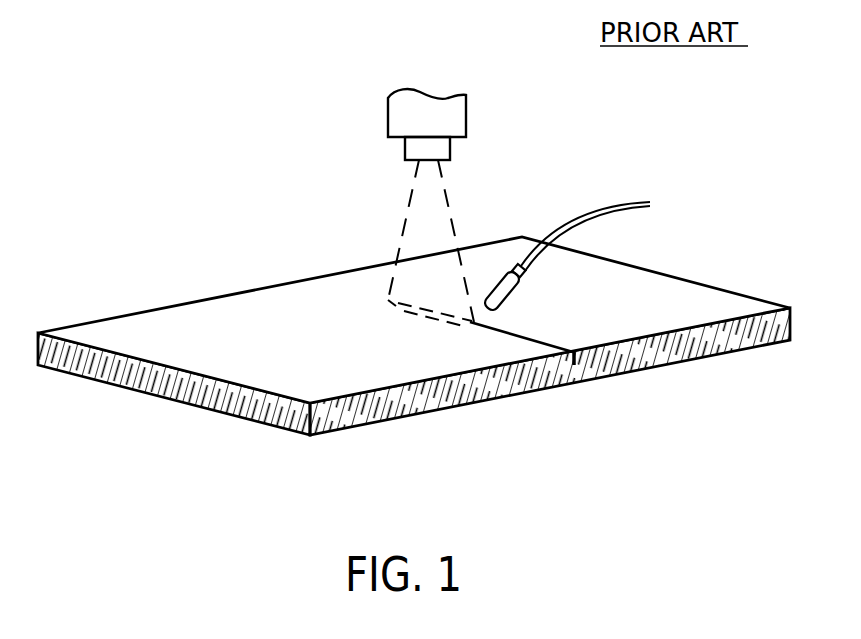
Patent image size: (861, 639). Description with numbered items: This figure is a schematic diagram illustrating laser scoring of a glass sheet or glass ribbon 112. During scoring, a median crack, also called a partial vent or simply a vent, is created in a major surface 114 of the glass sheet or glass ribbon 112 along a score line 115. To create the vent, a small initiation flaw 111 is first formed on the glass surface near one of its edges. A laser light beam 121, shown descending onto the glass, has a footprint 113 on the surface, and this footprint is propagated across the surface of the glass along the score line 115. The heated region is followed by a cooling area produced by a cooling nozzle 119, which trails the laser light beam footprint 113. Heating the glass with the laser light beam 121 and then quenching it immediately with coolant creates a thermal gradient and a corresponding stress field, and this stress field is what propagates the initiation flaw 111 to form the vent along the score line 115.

The initiation flaw 111 is at (590, 380).
The glass sheet or glass ribbon 112 is at (673, 362).
The laser light beam footprint 113 is at (412, 312).
The major surface of glass sheet or glass ribbon 114 is at (255, 318).
The score line 115 is at (563, 352).
The cooling nozzle 119 is at (513, 292).
The laser light beam 121 is at (453, 223).